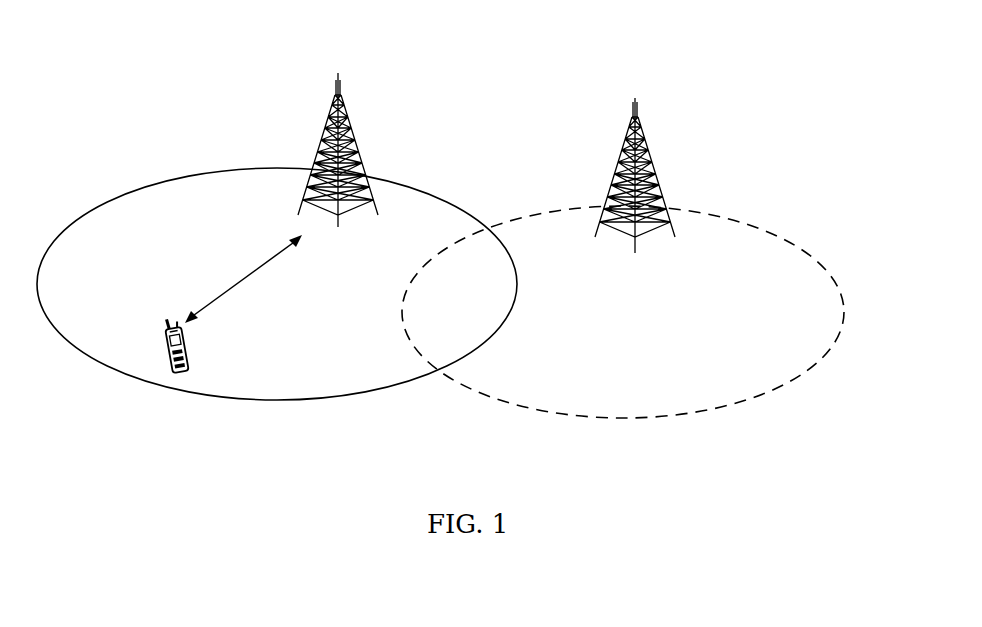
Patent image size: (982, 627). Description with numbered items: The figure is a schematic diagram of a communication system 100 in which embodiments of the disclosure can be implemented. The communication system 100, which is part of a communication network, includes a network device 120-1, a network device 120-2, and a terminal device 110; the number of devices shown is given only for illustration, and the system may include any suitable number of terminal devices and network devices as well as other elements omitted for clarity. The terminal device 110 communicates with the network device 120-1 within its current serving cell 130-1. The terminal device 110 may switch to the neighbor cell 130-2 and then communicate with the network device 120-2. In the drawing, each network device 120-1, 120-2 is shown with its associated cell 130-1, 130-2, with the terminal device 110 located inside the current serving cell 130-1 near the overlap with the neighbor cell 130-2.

The communication system 100 is at (245, 90).
The terminal device 110 is at (168, 342).
The network device 120-1 is at (340, 93).
The network device 120-2 is at (637, 116).
The current serving cell 130-1 is at (442, 200).
The neighbor cell 130-2 is at (790, 243).